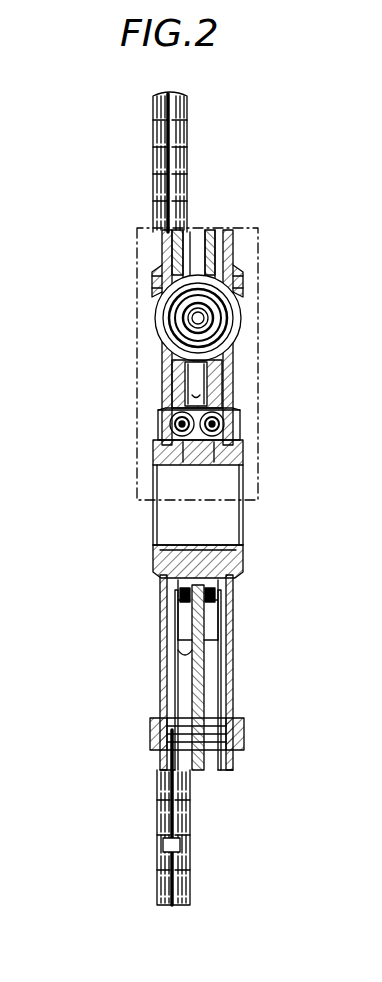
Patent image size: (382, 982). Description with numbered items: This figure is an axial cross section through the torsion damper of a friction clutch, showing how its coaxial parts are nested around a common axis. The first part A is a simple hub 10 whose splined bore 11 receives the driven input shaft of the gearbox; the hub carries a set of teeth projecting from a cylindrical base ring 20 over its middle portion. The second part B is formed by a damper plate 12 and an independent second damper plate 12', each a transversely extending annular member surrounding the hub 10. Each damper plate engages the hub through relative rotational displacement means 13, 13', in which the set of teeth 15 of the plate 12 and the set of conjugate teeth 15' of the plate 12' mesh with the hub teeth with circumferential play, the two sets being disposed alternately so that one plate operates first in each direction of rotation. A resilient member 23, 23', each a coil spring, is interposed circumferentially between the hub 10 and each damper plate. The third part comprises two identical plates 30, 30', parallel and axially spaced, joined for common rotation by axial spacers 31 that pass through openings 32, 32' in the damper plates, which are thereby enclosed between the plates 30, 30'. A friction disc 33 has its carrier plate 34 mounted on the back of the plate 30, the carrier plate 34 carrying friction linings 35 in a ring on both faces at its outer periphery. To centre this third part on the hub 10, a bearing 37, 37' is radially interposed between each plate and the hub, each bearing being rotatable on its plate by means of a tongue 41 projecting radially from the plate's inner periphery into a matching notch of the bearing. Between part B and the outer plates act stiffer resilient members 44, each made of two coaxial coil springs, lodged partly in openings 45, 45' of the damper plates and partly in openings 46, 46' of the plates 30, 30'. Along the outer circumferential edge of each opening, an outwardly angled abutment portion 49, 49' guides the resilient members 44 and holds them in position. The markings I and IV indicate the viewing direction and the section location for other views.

The hub 10 is at (152, 462).
The bore 11 is at (160, 548).
The damper plate 12 is at (195, 241).
The second damper plate 12' is at (245, 234).
The relative rotational displacement means 13 is at (182, 576).
The relative rotational displacement means 13' is at (217, 575).
The set of teeth 15 is at (152, 677).
The set of conjugate teeth 15' is at (254, 678).
The cylindrical base ring 20 is at (160, 436).
The resilient member 23 is at (178, 471).
The resilient member 23' is at (217, 471).
The plate 30 is at (132, 318).
The plate 30' is at (269, 328).
The axial spacers 31 is at (180, 735).
The openings 32 is at (136, 718).
The openings 32' is at (256, 717).
The friction disc 33 is at (155, 130).
The carrier plate 34 is at (176, 388).
The friction linings 35 is at (177, 94).
The bearing 37 is at (139, 420).
The bearing 37' is at (259, 396).
The tongue 41 is at (162, 578).
The resilient members 44 is at (162, 343).
The openings 45 is at (126, 274).
The openings 45' is at (269, 272).
The openings 46 is at (131, 311).
The openings 46' is at (265, 309).
The abutment portion 49 is at (126, 286).
The abutment portion 49' is at (270, 283).
The first part A is at (245, 440).
The second part B is at (226, 224).
The view direction I is at (265, 515).
The section IV is at (240, 228).